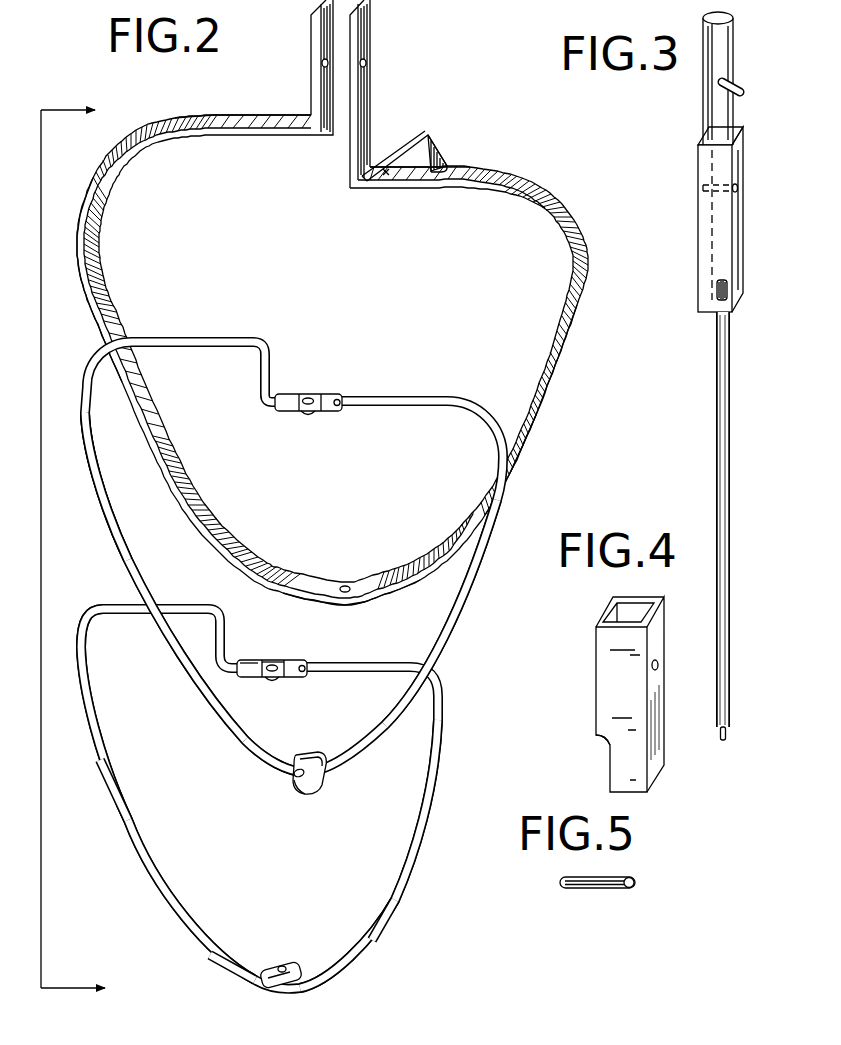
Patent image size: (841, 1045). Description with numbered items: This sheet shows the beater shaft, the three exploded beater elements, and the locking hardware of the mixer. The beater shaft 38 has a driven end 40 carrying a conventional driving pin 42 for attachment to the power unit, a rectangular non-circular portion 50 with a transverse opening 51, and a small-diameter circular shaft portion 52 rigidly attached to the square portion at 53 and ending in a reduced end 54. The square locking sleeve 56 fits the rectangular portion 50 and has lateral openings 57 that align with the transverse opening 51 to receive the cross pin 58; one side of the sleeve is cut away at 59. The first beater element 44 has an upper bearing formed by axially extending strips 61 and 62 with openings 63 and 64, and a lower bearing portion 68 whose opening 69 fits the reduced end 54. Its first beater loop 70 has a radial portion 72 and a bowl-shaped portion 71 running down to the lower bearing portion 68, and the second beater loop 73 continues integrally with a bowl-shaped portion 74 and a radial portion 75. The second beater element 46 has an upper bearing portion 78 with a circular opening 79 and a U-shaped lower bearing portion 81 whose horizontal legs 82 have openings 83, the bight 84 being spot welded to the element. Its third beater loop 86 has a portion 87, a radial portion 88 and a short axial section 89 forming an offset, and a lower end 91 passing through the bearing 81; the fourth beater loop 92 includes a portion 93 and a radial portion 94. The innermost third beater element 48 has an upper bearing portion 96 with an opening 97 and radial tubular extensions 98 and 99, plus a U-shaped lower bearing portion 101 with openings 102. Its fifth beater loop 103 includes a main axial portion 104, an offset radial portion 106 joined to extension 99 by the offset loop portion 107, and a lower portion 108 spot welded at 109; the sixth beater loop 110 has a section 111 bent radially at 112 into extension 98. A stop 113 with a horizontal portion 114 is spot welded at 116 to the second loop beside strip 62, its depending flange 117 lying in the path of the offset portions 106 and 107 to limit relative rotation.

In FIG. 3, the beater shaft 38 is at (741, 376).
In FIG. 3, the driven end 40 is at (740, 60).
In FIG. 3, the driving pin 42 is at (748, 86).
In FIG. 2, the first beater element 44 is at (332, 358).
In FIG. 2, the second beater element 46 is at (284, 536).
In FIG. 2, the third beater element 48 is at (270, 794).
In FIG. 3, the non-circular portion 50 is at (741, 162).
In FIG. 3, the transverse opening 51 is at (742, 188).
In FIG. 3, the shaft portion 52 is at (728, 432).
In FIG. 3, the attachment 53 is at (729, 288).
In FIG. 3, the reduced end 54 is at (727, 731).
In FIG. 4, the locking sleeve 56 is at (628, 694).
In FIG. 4, the lateral openings 57 is at (660, 665).
In FIG. 5, the cross pin 58 is at (606, 888).
In FIG. 4, the cut-away 59 is at (600, 744).
In FIG. 2, the axially extending strip 61 is at (303, 67).
In FIG. 2, the axially extending strip 62 is at (377, 94).
In FIG. 2, the opening 63 is at (322, 66).
In FIG. 2, the opening 64 is at (366, 64).
In FIG. 2, the lower bearing portion 68 is at (349, 600).
In FIG. 2, the opening 69 is at (346, 584).
In FIG. 2, the first beater loop 70 is at (284, 563).
In FIG. 2, the bowl-shaped portion 71 is at (124, 305).
In FIG. 2, the radial portion 72 is at (266, 134).
In FIG. 2, the second beater loop 73 is at (547, 368).
In FIG. 2, the bowl-shaped portion 74 is at (546, 401).
In FIG. 2, the radial portion 75 is at (420, 186).
In FIG. 2, the upper bearing portion 78 is at (308, 386).
In FIG. 2, the circular opening 79 is at (305, 397).
In FIG. 2, the lower bearing portion 81 is at (329, 769).
In FIG. 2, the legs 82 is at (322, 777).
In FIG. 2, the openings 83 is at (294, 784).
In FIG. 2, the bight 84 is at (327, 760).
In FIG. 2, the third beater loop 86 is at (97, 507).
In FIG. 2, the loop portion 87 is at (130, 546).
In FIG. 2, the radial portion 88 is at (230, 340).
In FIG. 2, the axial section 89 is at (263, 378).
In FIG. 2, the lower end 91 is at (282, 758).
In FIG. 2, the fourth beater loop 92 is at (292, 809).
In FIG. 2, the loop portion 93 is at (460, 601).
In FIG. 2, the radial portion 94 is at (396, 404).
In FIG. 2, the upper bearing portion 96 is at (266, 661).
In FIG. 2, the opening 97 is at (272, 678).
In FIG. 2, the radial tubular extension 98 is at (279, 664).
In FIG. 2, the radial tubular extension 99 is at (247, 660).
In FIG. 2, the lower bearing portion 101 is at (275, 974).
In FIG. 2, the openings 102 is at (285, 962).
In FIG. 2, the fifth beater loop 103 is at (132, 855).
In FIG. 2, the main axial portion 104 is at (160, 870).
In FIG. 2, the radial portion 106 is at (118, 610).
In FIG. 2, the offset loop portion 107 is at (220, 640).
In FIG. 2, the lower portion 108 is at (236, 962).
In FIG. 2, the spot weld 109 is at (283, 990).
In FIG. 2, the sixth beater loop 110 is at (406, 880).
In FIG. 2, the symmetrical section 111 is at (410, 813).
In FIG. 2, the radial bend 112 is at (352, 671).
In FIG. 2, the stop 113 is at (418, 163).
In FIG. 2, the horizontal portion 114 is at (397, 150).
In FIG. 2, the spot weld 116 is at (385, 172).
In FIG. 2, the depending flange 117 is at (447, 158).